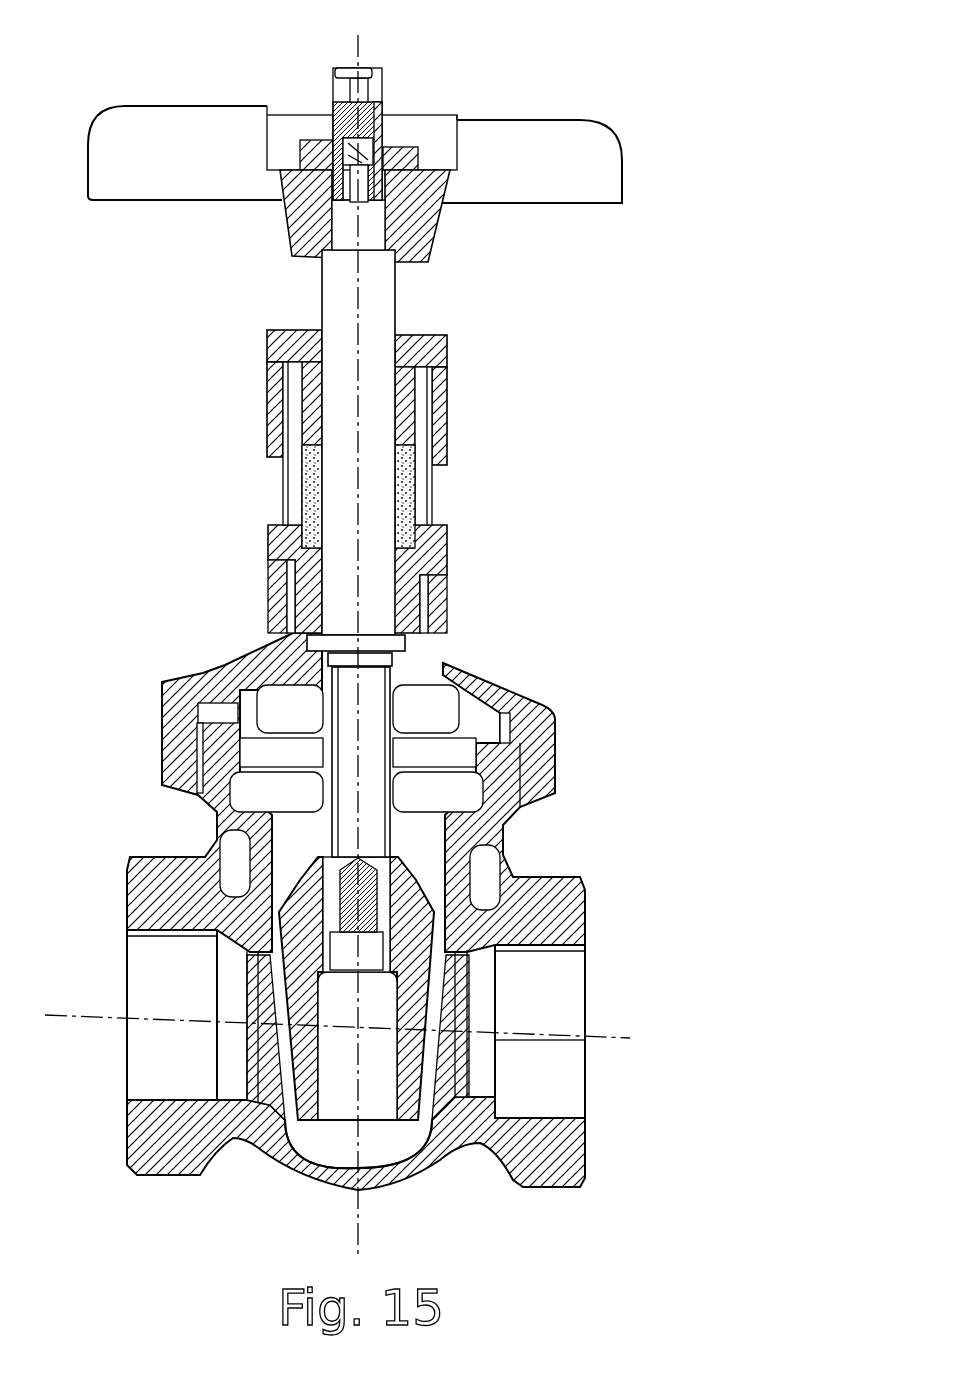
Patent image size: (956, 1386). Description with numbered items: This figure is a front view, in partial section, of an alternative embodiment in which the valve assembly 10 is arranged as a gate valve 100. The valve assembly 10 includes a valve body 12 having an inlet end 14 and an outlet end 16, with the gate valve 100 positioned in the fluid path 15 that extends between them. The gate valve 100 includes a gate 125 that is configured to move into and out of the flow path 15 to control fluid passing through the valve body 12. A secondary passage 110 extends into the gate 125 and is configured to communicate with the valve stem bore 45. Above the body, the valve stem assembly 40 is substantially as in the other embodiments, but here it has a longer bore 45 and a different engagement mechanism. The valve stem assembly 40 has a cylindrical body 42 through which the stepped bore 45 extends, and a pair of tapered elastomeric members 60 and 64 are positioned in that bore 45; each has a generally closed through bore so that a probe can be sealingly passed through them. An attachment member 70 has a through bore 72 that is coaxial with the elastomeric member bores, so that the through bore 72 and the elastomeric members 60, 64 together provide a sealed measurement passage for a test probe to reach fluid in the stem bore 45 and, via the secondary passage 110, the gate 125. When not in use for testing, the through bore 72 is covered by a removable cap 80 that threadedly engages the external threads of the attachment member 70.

The valve assembly 10 is at (518, 365).
The valve body 12 is at (545, 1200).
The inlet end 14 is at (558, 1000).
The fluid path 15 is at (542, 1089).
The outlet end 16 is at (150, 992).
The valve stem assembly 40 is at (373, 62).
The cylindrical body 42 is at (390, 122).
The stepped bore 45 is at (378, 890).
The elastomeric member 60 is at (335, 128).
The elastomeric member 64 is at (383, 128).
The attachment member 70 is at (372, 88).
The through bore 72 is at (360, 78).
The removable cap 80 is at (340, 68).
The gate valve 100 is at (282, 1075).
The secondary passage 110 is at (373, 1092).
The gate 125 is at (315, 1150).